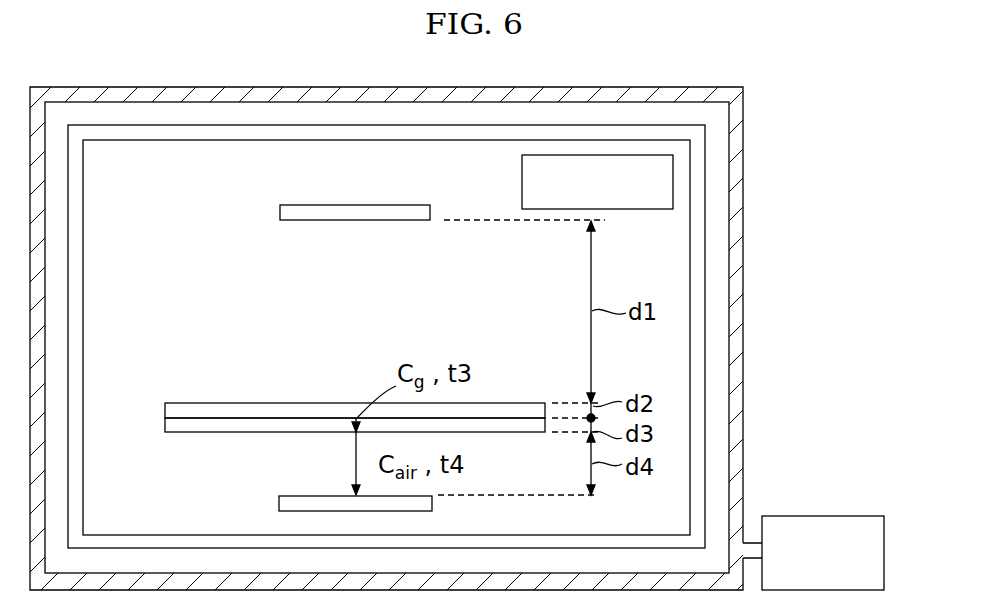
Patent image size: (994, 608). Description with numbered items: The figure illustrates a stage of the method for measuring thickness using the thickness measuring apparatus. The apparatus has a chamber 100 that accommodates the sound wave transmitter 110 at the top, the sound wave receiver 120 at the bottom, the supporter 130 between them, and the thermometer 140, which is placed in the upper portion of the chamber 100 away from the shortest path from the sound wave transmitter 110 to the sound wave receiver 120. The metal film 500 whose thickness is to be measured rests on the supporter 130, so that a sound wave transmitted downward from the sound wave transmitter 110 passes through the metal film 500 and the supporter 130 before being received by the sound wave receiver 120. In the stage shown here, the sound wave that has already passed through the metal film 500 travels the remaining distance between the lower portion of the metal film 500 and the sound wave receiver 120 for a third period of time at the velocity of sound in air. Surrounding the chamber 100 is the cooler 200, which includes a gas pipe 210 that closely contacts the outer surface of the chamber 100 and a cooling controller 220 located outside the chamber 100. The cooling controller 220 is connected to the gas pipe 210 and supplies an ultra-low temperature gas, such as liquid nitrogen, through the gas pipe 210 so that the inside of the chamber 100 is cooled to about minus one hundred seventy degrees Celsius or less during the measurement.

The chamber 100 is at (705, 234).
The sound wave transmitter 110 is at (285, 212).
The sound wave receiver 120 is at (283, 503).
The supporter 130 is at (168, 425).
The thermometer 140 is at (522, 182).
The cooler 200 is at (823, 496).
The gas pipe 210 is at (729, 393).
The cooling controller 220 is at (813, 515).
The metal film 500 is at (168, 410).